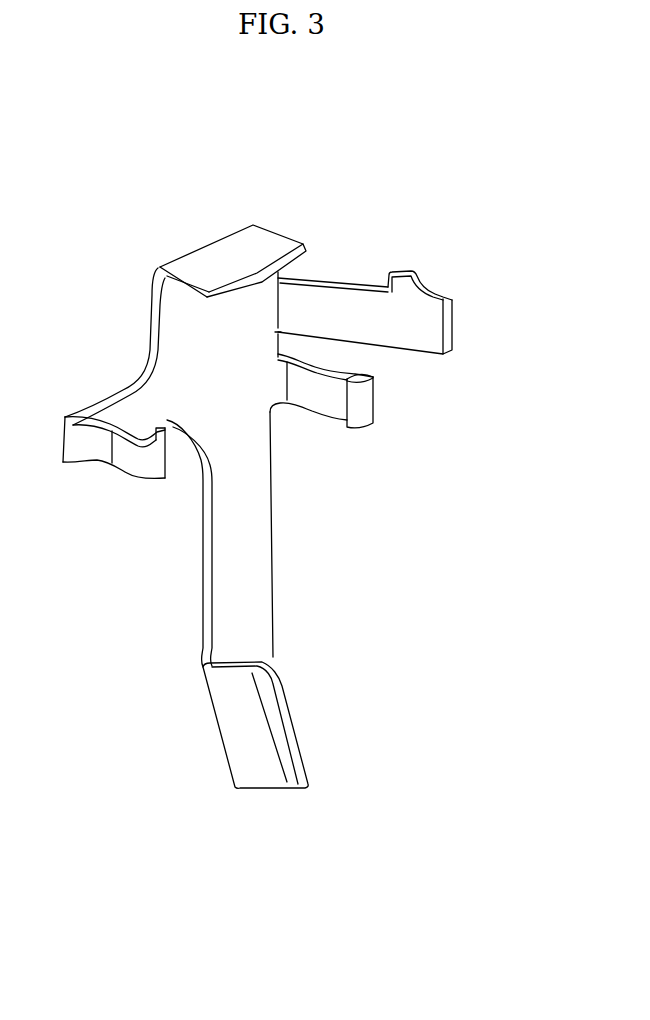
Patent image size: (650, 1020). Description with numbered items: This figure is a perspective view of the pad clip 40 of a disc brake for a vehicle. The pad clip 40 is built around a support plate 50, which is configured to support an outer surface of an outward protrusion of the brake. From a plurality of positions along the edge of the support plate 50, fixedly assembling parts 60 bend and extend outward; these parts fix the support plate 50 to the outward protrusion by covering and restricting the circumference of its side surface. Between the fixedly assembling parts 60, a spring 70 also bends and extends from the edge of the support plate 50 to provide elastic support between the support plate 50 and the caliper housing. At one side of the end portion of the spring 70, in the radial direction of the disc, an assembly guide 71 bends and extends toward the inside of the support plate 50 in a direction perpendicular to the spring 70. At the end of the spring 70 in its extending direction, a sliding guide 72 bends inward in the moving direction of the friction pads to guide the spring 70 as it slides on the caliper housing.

The pad clip 40 is at (237, 160).
The support plate 50 is at (240, 392).
The fixedly assembling parts 60 is at (207, 262).
The spring 70 is at (344, 276).
The assembly guide 71 is at (413, 268).
The sliding guide 72 is at (455, 325).